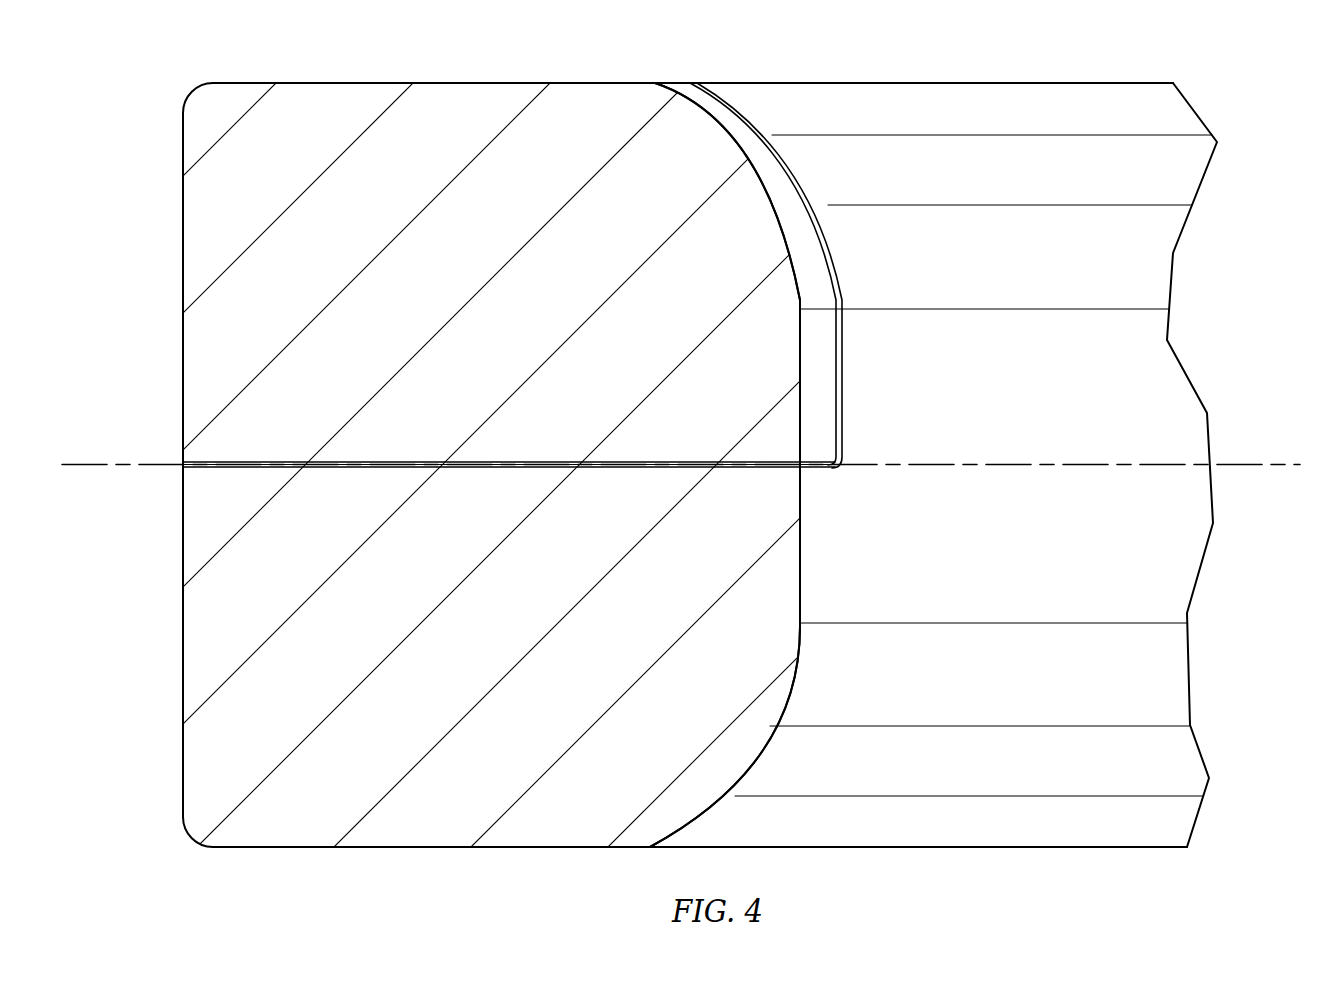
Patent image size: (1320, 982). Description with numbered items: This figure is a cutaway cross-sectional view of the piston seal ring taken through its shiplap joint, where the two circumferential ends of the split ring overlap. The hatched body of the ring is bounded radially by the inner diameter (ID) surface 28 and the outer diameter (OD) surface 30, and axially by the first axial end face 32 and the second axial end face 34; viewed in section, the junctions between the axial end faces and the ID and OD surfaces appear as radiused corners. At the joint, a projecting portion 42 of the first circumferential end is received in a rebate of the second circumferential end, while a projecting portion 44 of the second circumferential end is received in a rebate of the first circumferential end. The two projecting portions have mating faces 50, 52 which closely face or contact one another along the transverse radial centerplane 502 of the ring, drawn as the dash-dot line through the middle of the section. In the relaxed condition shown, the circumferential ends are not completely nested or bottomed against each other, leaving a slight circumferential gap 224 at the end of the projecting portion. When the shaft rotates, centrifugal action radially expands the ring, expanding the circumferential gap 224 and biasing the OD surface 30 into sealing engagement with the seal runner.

The inner diameter (ID) surface 28 is at (802, 554).
The outer diameter (OD) surface 30 is at (182, 558).
The first axial end face 32 is at (280, 82).
The second axial end face 34 is at (437, 849).
The projecting portion 42 is at (584, 132).
The projecting portion 44 is at (539, 798).
The mating face 50 is at (500, 469).
The mating face 52 is at (536, 462).
The circumferential gap 224 is at (838, 398).
The transverse radial centerplane 502 is at (78, 463).